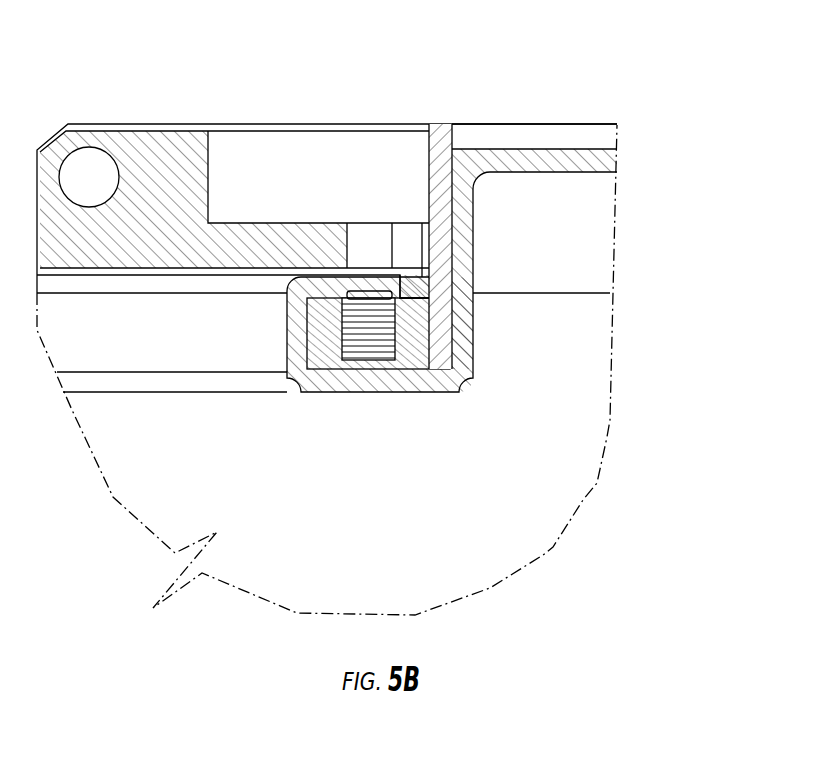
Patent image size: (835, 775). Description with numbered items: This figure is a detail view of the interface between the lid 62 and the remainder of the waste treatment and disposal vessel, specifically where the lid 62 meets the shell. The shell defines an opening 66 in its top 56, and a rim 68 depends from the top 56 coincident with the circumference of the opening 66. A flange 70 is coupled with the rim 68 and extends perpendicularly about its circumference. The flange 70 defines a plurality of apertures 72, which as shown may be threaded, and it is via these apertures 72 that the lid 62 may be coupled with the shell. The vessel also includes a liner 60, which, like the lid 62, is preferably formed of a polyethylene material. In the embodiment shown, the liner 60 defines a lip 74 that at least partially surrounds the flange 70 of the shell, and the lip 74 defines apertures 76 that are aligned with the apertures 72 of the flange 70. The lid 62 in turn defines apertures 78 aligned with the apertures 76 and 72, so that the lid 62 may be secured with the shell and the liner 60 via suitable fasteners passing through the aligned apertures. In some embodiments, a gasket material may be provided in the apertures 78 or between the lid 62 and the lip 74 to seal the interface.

The top 56 is at (545, 123).
The liner 60 is at (475, 365).
The lid 62 is at (258, 222).
The opening 66 is at (381, 152).
The rim 68 is at (437, 130).
The flange 70 is at (420, 357).
The apertures 72 is at (393, 350).
The lip 74 is at (310, 287).
The apertures 76 is at (377, 287).
The apertures 78 is at (390, 247).